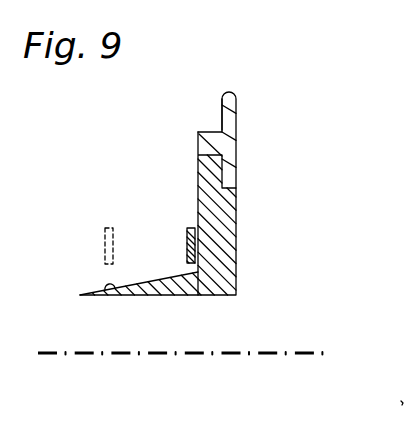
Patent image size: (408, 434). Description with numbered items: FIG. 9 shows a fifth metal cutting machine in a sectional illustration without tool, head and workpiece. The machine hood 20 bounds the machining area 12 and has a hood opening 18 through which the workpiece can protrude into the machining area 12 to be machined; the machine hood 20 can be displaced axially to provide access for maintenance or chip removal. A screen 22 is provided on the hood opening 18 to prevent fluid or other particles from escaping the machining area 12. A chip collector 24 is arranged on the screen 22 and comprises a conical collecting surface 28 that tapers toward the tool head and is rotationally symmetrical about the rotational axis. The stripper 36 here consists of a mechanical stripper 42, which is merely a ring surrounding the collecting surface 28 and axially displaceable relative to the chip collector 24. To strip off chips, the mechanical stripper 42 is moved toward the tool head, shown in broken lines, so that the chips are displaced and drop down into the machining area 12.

The machining area 12 is at (128, 144).
The hood opening 18 is at (267, 248).
The machine hood 20 is at (225, 130).
The screen 22 is at (237, 215).
The chip collector 24 is at (86, 294).
The collecting surface 28 is at (113, 293).
The stripper 36 is at (182, 214).
The mechanical stripper 42 is at (113, 243).